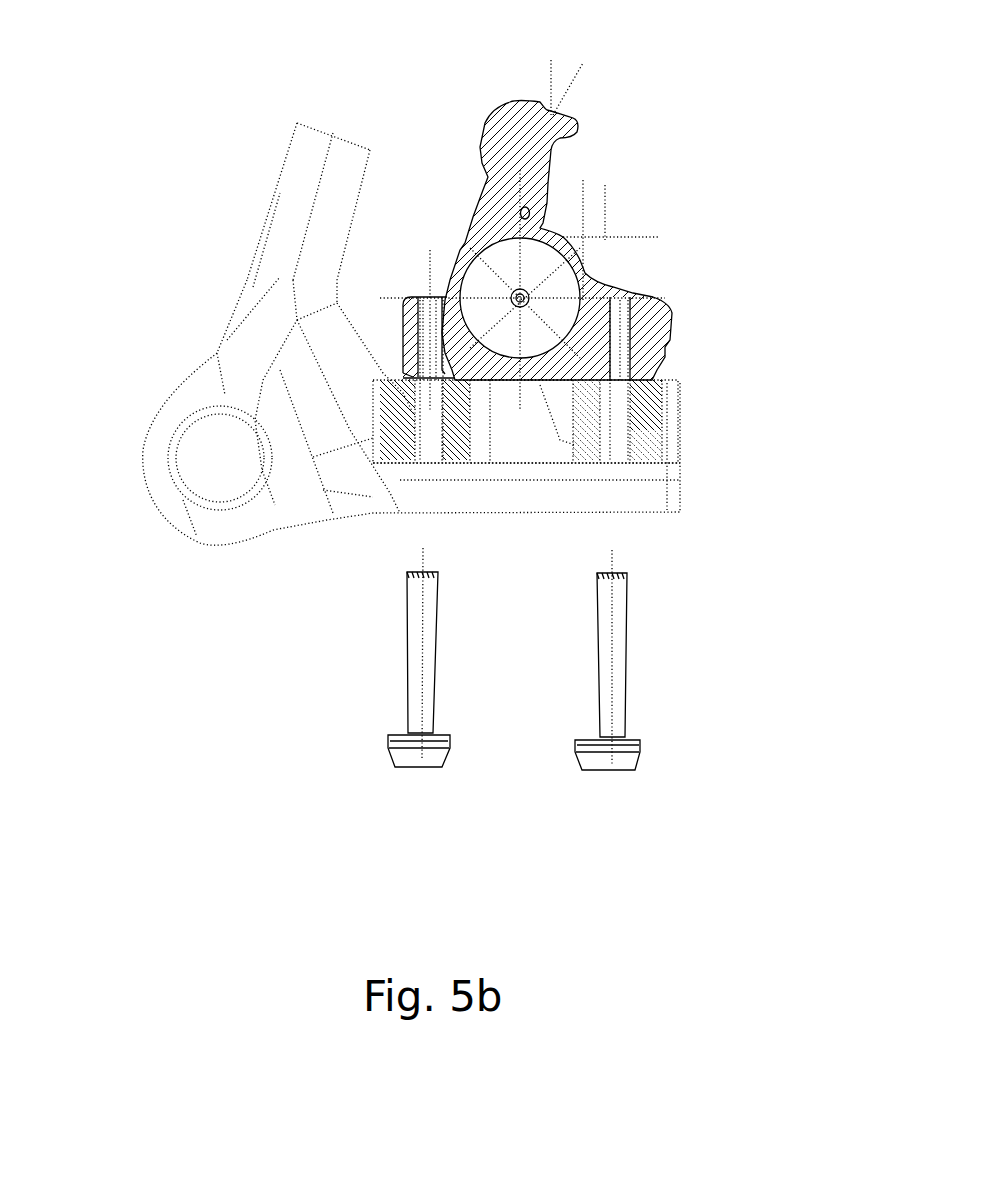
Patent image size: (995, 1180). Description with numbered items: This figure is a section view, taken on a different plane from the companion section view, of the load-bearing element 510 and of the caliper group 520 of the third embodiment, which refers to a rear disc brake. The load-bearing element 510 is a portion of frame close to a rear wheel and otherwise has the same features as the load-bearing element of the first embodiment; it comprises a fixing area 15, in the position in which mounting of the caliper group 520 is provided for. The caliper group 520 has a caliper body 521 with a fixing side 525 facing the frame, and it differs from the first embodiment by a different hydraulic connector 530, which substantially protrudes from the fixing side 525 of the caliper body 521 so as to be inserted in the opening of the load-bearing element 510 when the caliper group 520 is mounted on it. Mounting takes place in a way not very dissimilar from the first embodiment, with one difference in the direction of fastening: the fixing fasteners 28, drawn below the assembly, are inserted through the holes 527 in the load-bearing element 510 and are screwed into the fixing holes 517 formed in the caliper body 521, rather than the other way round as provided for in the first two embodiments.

The load-bearing element 510 is at (250, 330).
The fixing area 15 is at (427, 268).
The caliper group 520 is at (604, 148).
The caliper body 521 is at (670, 312).
The fixing holes 517 is at (620, 338).
The fixing side 525 is at (633, 385).
The holes 527 is at (427, 423).
The hydraulic connector 530 is at (527, 403).
The fixing fasteners 28 is at (418, 692).